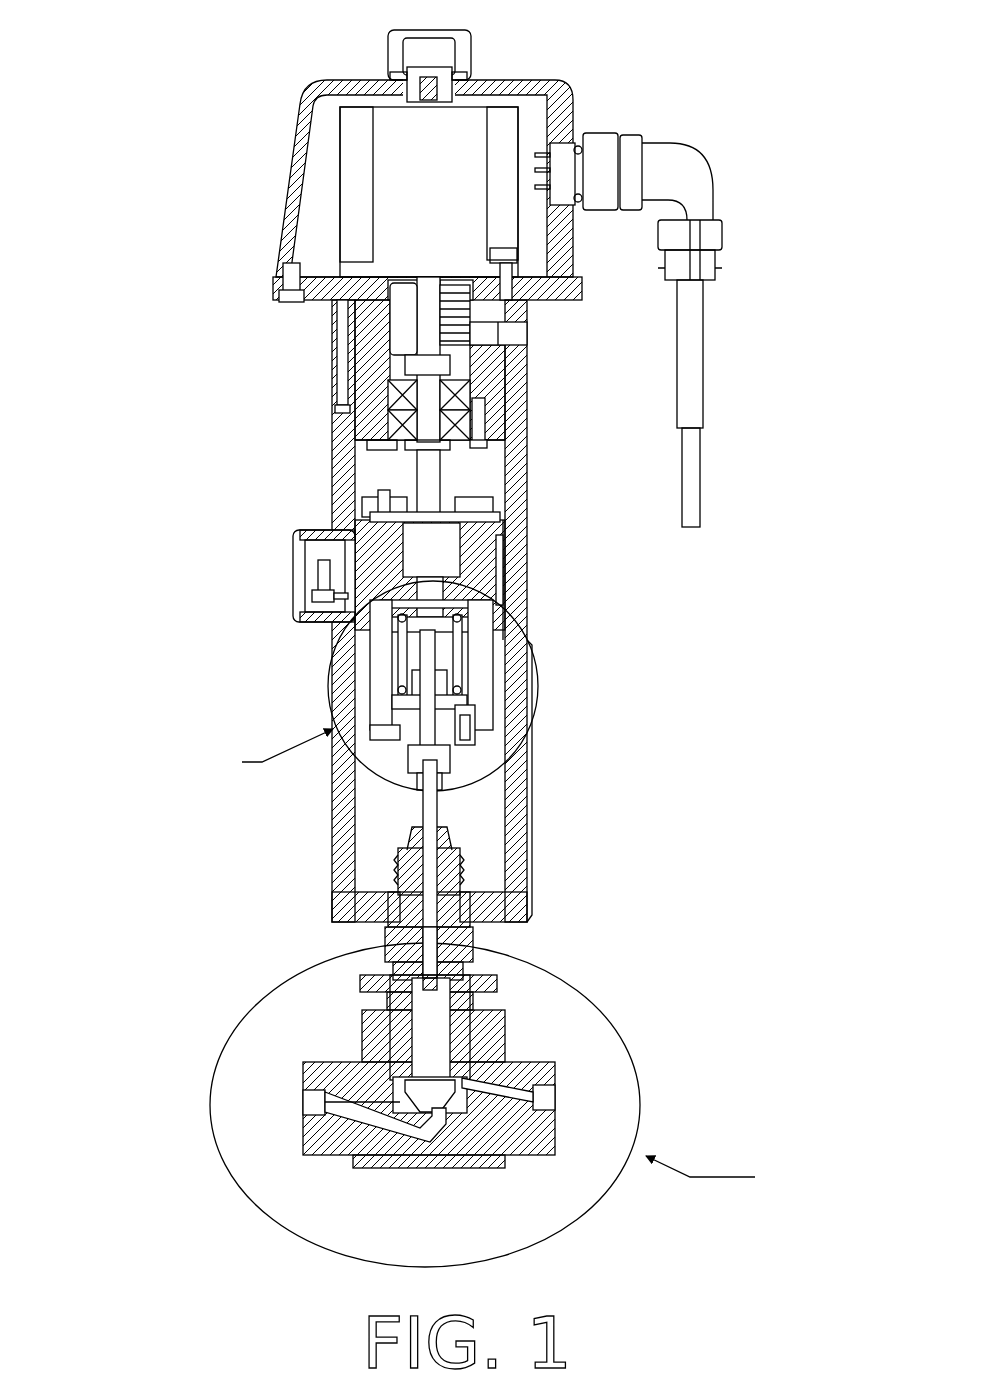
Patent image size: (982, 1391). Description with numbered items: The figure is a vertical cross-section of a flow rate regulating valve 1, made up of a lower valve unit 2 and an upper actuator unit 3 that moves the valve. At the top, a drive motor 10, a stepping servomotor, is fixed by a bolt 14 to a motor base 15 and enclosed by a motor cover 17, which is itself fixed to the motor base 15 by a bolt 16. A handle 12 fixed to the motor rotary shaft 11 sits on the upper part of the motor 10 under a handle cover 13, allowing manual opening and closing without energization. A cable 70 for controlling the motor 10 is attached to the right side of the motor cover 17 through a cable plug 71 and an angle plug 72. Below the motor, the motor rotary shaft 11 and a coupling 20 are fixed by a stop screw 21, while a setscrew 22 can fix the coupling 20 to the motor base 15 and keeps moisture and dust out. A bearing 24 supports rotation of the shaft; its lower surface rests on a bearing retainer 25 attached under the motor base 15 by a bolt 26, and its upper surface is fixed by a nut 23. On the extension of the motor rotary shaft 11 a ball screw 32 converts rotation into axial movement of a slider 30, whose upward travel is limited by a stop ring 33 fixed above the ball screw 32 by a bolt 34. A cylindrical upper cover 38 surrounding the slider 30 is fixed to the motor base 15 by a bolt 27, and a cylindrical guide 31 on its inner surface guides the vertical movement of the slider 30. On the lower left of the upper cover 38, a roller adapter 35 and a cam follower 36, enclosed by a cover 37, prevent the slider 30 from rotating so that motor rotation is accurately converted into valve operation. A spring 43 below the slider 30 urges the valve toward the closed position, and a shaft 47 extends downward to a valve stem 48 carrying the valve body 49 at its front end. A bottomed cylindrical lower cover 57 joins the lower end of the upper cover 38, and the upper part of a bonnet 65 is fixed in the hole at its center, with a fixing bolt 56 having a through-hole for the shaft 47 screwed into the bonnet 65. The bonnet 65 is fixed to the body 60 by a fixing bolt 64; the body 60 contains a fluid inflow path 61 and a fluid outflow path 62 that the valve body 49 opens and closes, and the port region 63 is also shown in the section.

The flow rate regulating valve 1 is at (703, 45).
The valve unit 2 is at (158, 948).
The actuator unit 3 is at (148, 918).
The drive motor 10 is at (380, 138).
The motor rotary shaft 11 is at (433, 298).
The handle 12 is at (420, 68).
The handle cover 13 is at (398, 37).
The bolt 14 is at (535, 238).
The motor base 15 is at (583, 296).
The bolt 16 is at (285, 303).
The motor cover 17 is at (297, 162).
The coupling 20 is at (348, 343).
The stop screw 21 is at (460, 325).
The setscrew 22 is at (510, 337).
The nut 23 is at (346, 363).
The bearing 24 is at (470, 397).
The bearing retainer 25 is at (490, 430).
The bolt 26 is at (470, 465).
The bolt 27 is at (345, 316).
The slider 30 is at (485, 565).
The cylindrical guide 31 is at (350, 540).
The ball screw 32 is at (503, 540).
The stop ring 33 is at (487, 503).
The bolt 34 is at (380, 493).
The roller adapter 35 is at (335, 555).
The cam follower 36 is at (325, 573).
The cover 37 is at (330, 612).
The upper cover 38 is at (498, 580).
The spring 43 is at (460, 645).
The shaft 47 is at (430, 815).
The valve stem 48 is at (435, 1037).
The valve body 49 is at (440, 1098).
The fixing bolt 56 is at (412, 832).
The lower cover 57 is at (340, 788).
The body 60 is at (335, 1065).
The fluid inflow path 61 is at (340, 1108).
The fluid outflow path 62 is at (498, 1090).
The port 63 is at (400, 1102).
The fixing bolt 64 is at (365, 980).
The bonnet 65 is at (470, 955).
The cable 70 is at (692, 335).
The cable plug 71 is at (700, 243).
The angle plug 72 is at (695, 170).